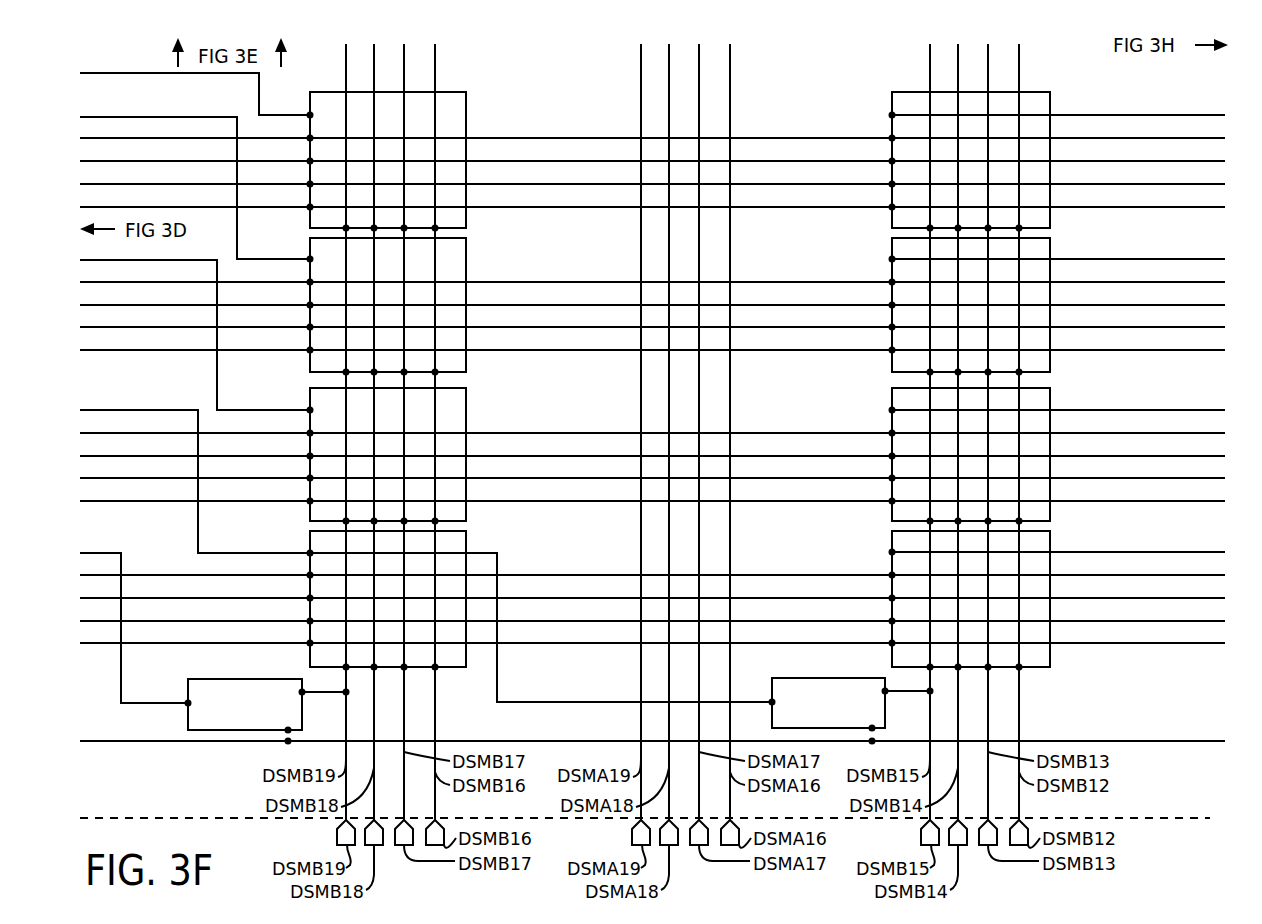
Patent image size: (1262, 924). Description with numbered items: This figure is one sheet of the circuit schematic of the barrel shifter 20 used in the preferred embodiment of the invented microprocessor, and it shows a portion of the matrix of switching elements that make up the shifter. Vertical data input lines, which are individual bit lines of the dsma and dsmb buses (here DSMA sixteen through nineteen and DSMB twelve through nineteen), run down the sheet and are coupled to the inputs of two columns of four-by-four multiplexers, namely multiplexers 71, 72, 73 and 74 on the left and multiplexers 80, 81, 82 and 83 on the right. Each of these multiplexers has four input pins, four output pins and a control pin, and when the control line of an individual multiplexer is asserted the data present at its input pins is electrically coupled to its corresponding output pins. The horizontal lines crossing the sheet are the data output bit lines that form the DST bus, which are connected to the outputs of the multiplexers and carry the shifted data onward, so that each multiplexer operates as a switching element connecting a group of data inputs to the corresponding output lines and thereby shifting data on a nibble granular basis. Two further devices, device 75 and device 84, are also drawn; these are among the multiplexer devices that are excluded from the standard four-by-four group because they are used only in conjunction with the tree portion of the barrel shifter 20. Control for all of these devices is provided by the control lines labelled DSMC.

The multiplexer 71 is at (466, 101).
The multiplexer 72 is at (466, 247).
The multiplexer 73 is at (466, 397).
The multiplexer 74 is at (466, 540).
The multiplexer device 75 is at (190, 679).
The multiplexer 80 is at (1050, 101).
The multiplexer 81 is at (1050, 247).
The multiplexer 82 is at (1050, 397).
The multiplexer 83 is at (1050, 540).
The multiplexer device 84 is at (780, 678).
The barrel shifter 20 is at (1203, 820).